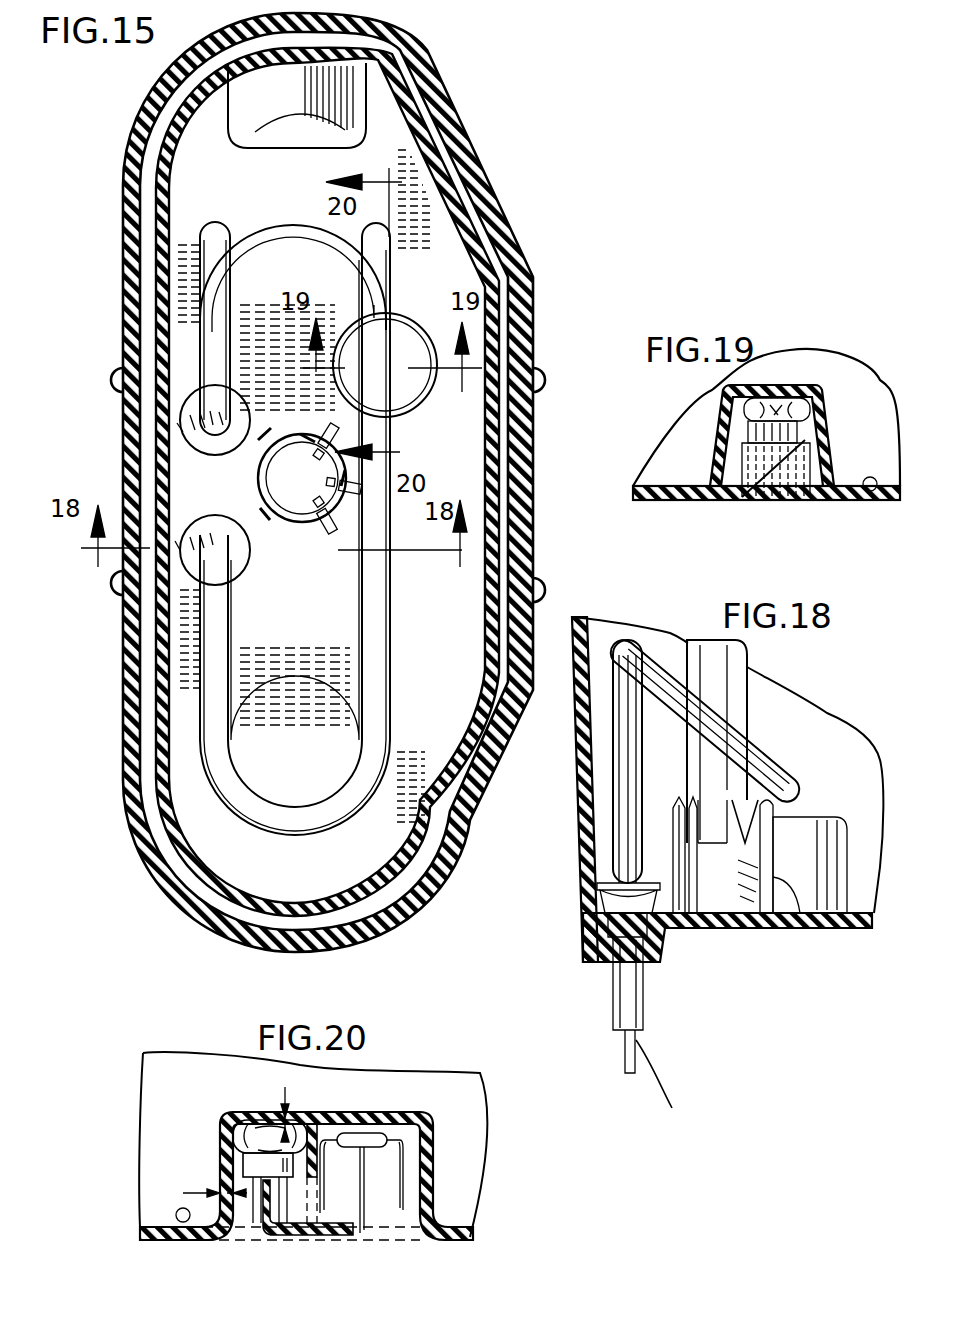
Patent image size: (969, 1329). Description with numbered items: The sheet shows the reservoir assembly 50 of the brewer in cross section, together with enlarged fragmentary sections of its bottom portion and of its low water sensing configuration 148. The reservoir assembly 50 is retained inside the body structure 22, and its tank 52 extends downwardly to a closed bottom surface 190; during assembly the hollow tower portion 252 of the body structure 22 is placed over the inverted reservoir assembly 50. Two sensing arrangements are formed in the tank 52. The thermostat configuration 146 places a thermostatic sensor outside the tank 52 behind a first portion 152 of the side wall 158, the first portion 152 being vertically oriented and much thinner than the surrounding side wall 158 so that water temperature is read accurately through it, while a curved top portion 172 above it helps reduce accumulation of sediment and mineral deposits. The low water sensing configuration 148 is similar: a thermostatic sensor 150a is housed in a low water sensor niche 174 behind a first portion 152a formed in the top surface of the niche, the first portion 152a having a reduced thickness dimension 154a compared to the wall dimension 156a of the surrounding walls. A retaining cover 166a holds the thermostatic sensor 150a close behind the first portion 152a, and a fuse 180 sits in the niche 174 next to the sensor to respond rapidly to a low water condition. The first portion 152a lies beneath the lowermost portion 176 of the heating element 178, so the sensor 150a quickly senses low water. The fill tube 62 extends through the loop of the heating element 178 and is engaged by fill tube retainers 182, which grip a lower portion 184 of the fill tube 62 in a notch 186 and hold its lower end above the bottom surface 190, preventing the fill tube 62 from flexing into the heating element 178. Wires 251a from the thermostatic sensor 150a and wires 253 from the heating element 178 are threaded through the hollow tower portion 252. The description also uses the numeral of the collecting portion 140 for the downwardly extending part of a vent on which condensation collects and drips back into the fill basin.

In FIG. 15, the top portion 172 is at (396, 45).
In FIG. 15, the thermostat configuration 146 is at (205, 127).
In FIG. 15, the first portion 152 is at (264, 130).
In FIG. 15, the low water sensing configuration 148 is at (426, 311).
In FIG. 19, the low water sensing configuration 148 is at (705, 410).
In FIG. 18, the low water sensing configuration 148 is at (856, 805).
In FIG. 20, the low water sensing configuration 148 is at (441, 1099).
In FIG. 15, the first portion 152a is at (400, 400).
In FIG. 19, the first portion 152a is at (801, 393).
In FIG. 18, the first portion 152a is at (823, 812).
In FIG. 20, the first portion 152a is at (261, 1117).
In FIG. 15, the lowermost portion 176 is at (392, 410).
In FIG. 18, the lowermost portion 176 is at (800, 735).
In FIG. 15, the heating element 178 is at (216, 628).
In FIG. 18, the heating element 178 is at (618, 822).
In FIG. 15, the notch 186 is at (313, 523).
In FIG. 15, the fill tube retainers 182 is at (273, 541).
In FIG. 18, the fill tube retainers 182 is at (788, 928).
In FIG. 15, the fill tube 62 is at (326, 523).
In FIG. 18, the fill tube 62 is at (747, 677).
In FIG. 15, the bottom surface 190 is at (316, 766).
In FIG. 19, the bottom surface 190 is at (870, 492).
In FIG. 20, the bottom surface 190 is at (176, 1223).
In FIG. 15, the reservoir assembly 50 is at (140, 653).
In FIG. 15, the tank 52 is at (158, 688).
In FIG. 19, the tank 52 is at (684, 426).
In FIG. 18, the tank 52 is at (580, 762).
In FIG. 15, the hollow tower portion 252 is at (117, 763).
In FIG. 15, the body structure 22 is at (136, 795).
In FIG. 19, the thermostatic sensor 150a is at (784, 396).
In FIG. 20, the thermostatic sensor 150a is at (261, 1127).
In FIG. 19, the low water sensor niche 174 is at (746, 440).
In FIG. 20, the low water sensor niche 174 is at (414, 1226).
In FIG. 19, the retaining cover 166a is at (789, 500).
In FIG. 20, the retaining cover 166a is at (367, 1240).
In FIG. 19, the wires 251a is at (741, 500).
In FIG. 20, the wires 251a is at (286, 1240).
In FIG. 18, the side wall 158 is at (590, 640).
In FIG. 18, the collecting portion 140 is at (838, 928).
In FIG. 18, the lower portion 184 is at (710, 928).
In FIG. 18, the wires 253 is at (668, 1106).
In FIG. 20, the fuse 180 is at (368, 1136).
In FIG. 20, the reduced thickness dimension 154a is at (288, 1113).
In FIG. 20, the wall dimension 156a is at (214, 1190).